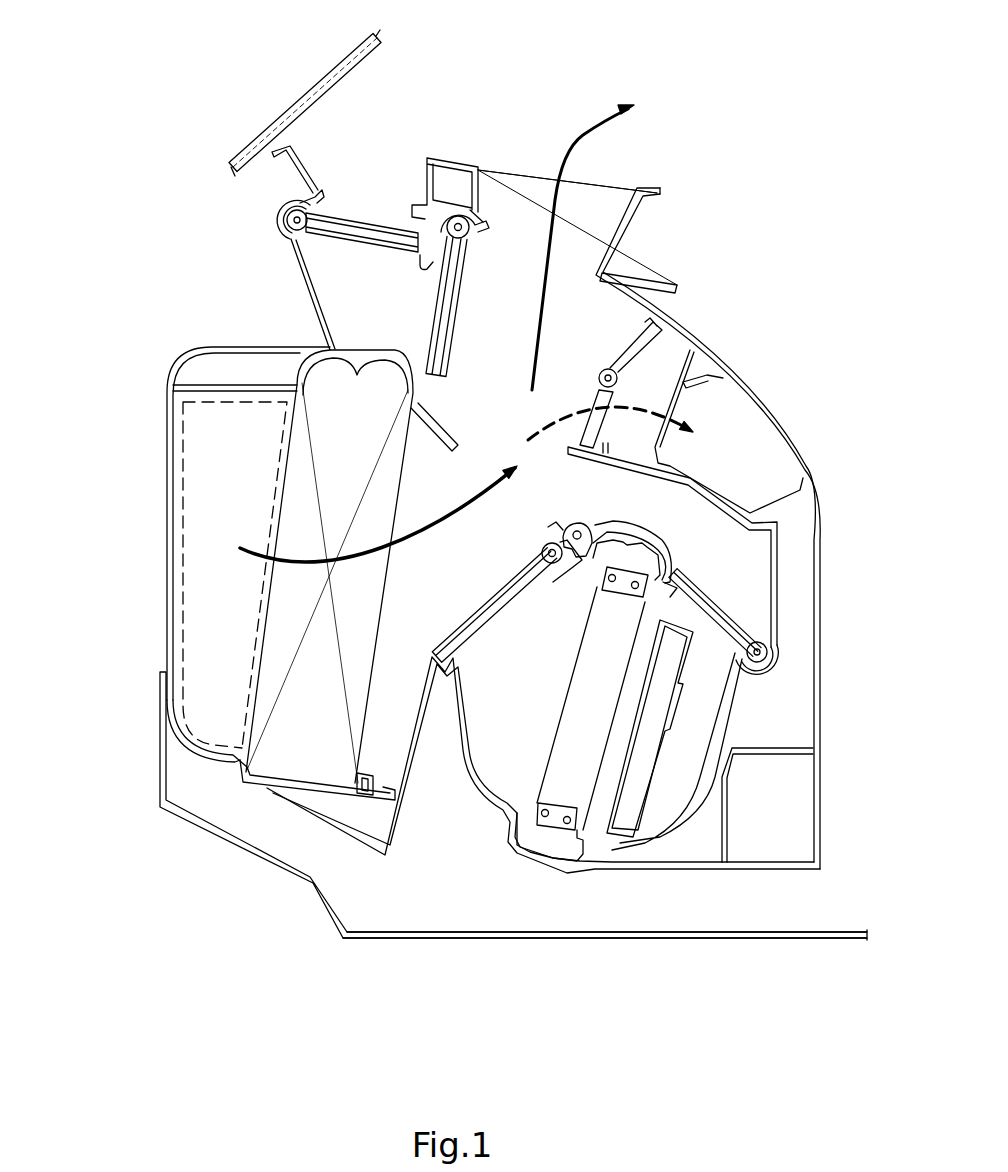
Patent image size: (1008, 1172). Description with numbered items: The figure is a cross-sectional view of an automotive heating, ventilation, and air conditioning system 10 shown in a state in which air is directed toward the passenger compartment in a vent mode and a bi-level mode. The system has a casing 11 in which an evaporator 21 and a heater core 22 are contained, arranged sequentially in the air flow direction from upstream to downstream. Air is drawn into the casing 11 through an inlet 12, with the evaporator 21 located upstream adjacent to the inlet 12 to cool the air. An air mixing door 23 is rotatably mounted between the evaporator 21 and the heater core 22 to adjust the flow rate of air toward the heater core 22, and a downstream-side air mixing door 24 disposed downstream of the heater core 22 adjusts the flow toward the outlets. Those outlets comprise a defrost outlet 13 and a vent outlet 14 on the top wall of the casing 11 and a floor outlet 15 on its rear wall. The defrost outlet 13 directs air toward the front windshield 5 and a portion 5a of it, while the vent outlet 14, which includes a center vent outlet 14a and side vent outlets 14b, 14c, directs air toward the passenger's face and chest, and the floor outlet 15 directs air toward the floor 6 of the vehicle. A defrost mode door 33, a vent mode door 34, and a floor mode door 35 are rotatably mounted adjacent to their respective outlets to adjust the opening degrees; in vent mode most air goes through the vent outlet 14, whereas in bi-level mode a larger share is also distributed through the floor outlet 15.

The automotive heating, ventilation, and air conditioning (HVAC) system 10 is at (76, 126).
The front windshield 5 is at (360, 48).
The cover bracket 5a is at (278, 128).
The floor 6 is at (713, 940).
The casing 11 is at (156, 420).
The inlet 12 is at (182, 556).
The defrost outlet 13 is at (368, 193).
The vent outlet 14 is at (661, 176).
The center vent outlet 14a is at (628, 266).
The side vent outlet 14b is at (512, 172).
The side vent outlet 14c is at (567, 181).
The floor outlet 15 is at (760, 457).
The evaporator 21 is at (277, 722).
The heater core 22 is at (565, 777).
The air mixing door 23 is at (493, 628).
The downstream-side air mixing door 24 is at (717, 605).
The defrost mode door 33 is at (295, 259).
The vent mode door 34 is at (437, 298).
The floor mode door 35 is at (657, 360).